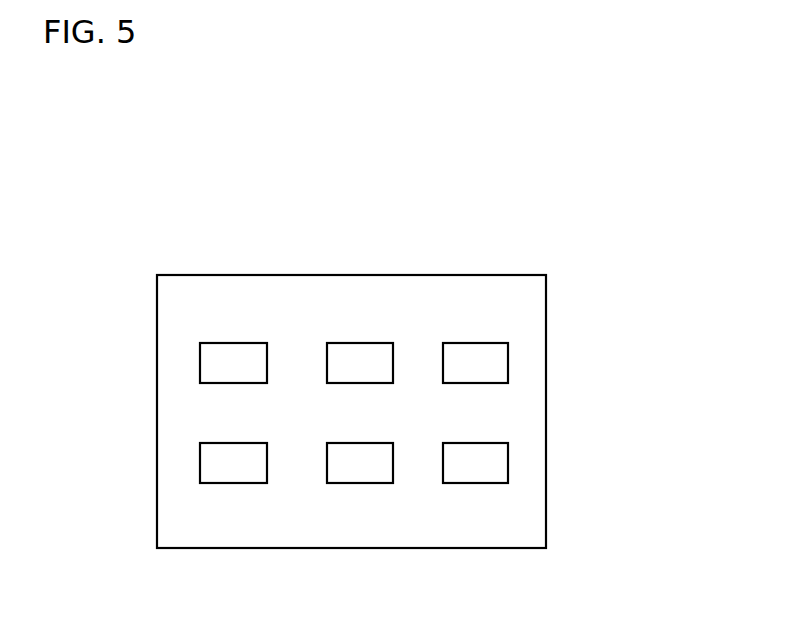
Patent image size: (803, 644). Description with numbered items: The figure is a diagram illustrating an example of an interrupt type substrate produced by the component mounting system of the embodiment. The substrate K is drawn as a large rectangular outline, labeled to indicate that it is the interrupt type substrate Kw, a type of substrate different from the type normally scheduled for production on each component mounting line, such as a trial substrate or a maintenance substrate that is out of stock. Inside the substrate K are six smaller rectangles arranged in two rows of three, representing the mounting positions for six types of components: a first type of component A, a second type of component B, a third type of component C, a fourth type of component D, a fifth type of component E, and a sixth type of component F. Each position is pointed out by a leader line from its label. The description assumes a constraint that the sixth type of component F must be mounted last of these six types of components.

The substrate K is at (560, 312).